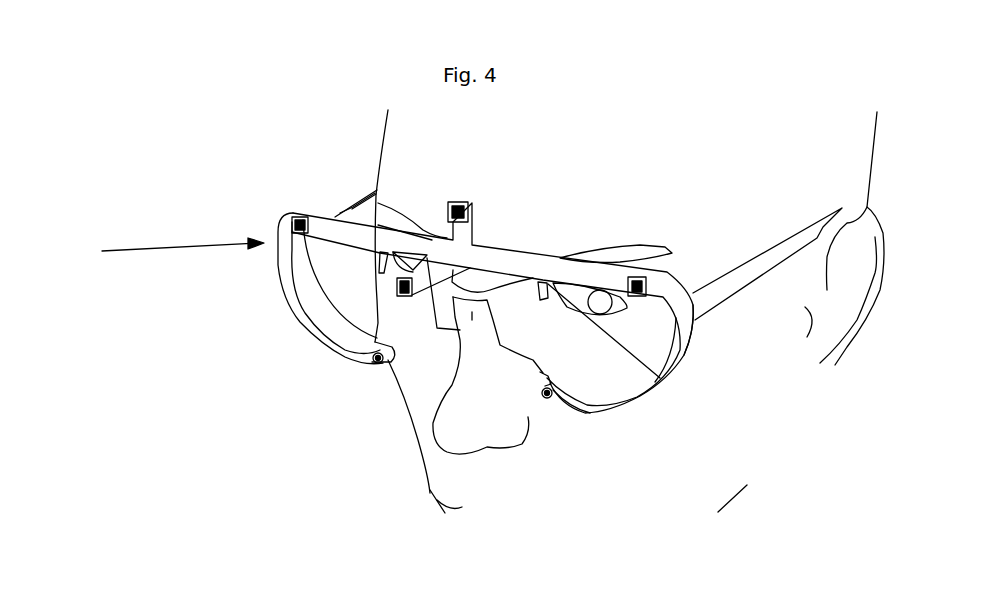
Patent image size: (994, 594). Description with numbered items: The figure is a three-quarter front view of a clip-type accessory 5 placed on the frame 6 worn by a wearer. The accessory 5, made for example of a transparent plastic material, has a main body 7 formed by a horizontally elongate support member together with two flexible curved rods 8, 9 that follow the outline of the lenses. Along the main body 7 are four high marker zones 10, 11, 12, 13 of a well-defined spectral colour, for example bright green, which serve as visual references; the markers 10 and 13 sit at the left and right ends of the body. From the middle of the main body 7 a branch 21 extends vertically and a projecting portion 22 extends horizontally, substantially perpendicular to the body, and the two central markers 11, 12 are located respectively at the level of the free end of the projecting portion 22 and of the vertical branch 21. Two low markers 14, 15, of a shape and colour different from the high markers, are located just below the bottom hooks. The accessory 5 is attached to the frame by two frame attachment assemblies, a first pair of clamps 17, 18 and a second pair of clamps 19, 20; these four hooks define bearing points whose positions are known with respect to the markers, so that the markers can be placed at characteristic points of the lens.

The clip-type accessory 5 is at (453, 264).
The frame 6 is at (353, 207).
The main body 7 is at (333, 227).
The flexible curved rod 8 is at (288, 282).
The flexible curved rod 9 is at (688, 328).
The high marker 10 is at (298, 217).
The high marker 11 is at (404, 278).
The high marker 12 is at (462, 230).
The high marker 13 is at (637, 278).
The low marker 14 is at (378, 362).
The low marker 15 is at (547, 398).
The clamp 17 is at (382, 258).
The clamp 18 is at (376, 359).
The clamp 19 is at (680, 383).
The clamp 20 is at (607, 413).
The branch 21 is at (616, 215).
The projecting portion 22 is at (519, 314).